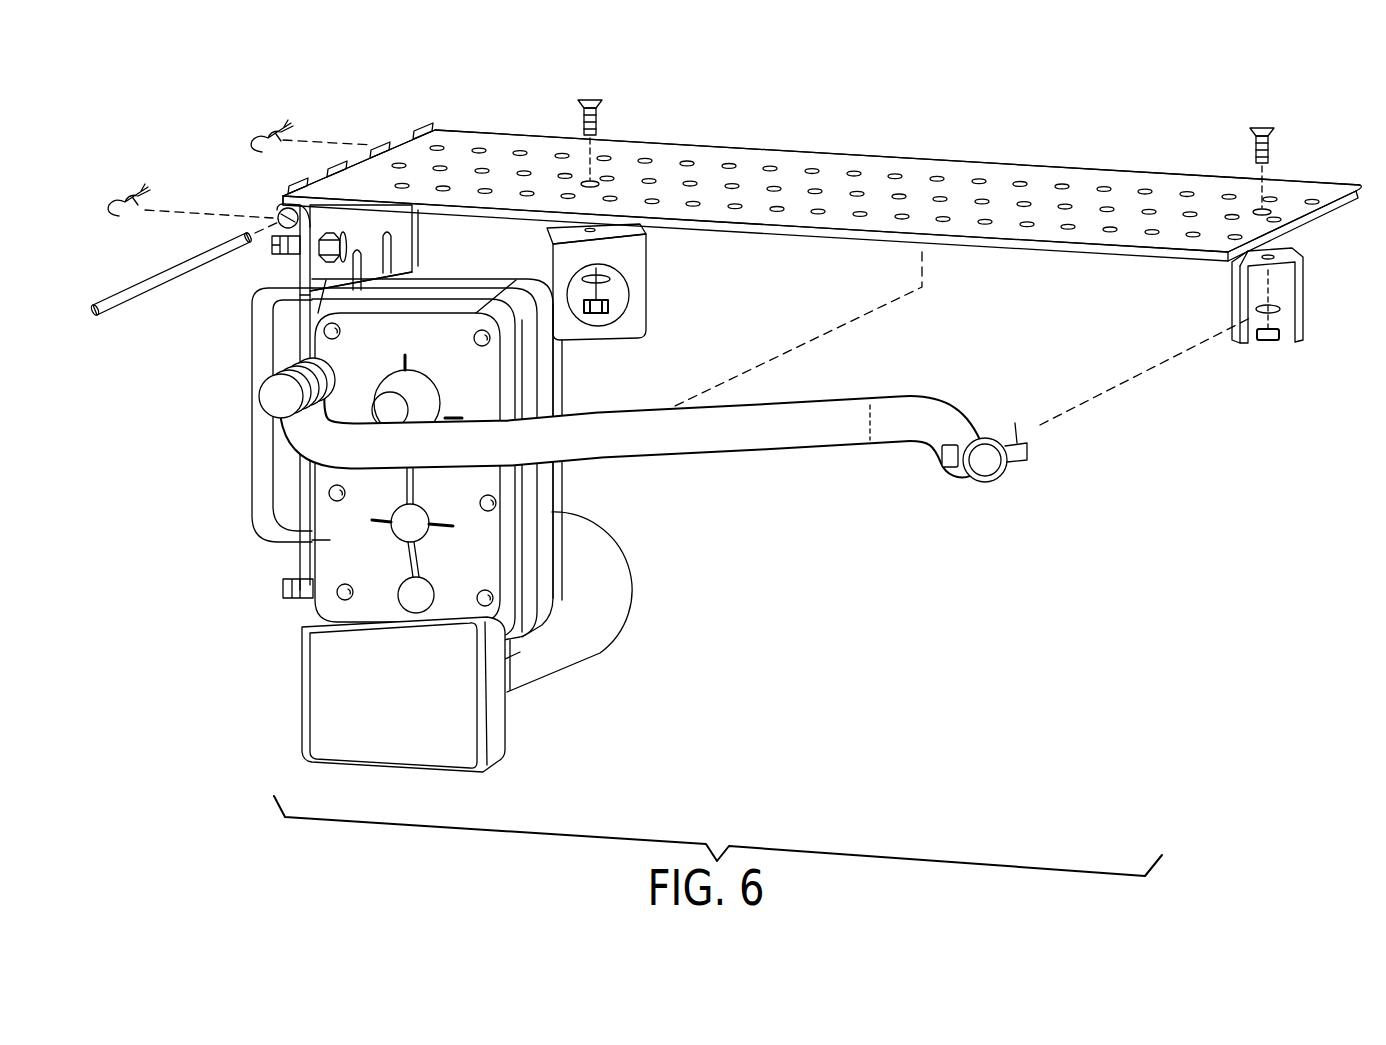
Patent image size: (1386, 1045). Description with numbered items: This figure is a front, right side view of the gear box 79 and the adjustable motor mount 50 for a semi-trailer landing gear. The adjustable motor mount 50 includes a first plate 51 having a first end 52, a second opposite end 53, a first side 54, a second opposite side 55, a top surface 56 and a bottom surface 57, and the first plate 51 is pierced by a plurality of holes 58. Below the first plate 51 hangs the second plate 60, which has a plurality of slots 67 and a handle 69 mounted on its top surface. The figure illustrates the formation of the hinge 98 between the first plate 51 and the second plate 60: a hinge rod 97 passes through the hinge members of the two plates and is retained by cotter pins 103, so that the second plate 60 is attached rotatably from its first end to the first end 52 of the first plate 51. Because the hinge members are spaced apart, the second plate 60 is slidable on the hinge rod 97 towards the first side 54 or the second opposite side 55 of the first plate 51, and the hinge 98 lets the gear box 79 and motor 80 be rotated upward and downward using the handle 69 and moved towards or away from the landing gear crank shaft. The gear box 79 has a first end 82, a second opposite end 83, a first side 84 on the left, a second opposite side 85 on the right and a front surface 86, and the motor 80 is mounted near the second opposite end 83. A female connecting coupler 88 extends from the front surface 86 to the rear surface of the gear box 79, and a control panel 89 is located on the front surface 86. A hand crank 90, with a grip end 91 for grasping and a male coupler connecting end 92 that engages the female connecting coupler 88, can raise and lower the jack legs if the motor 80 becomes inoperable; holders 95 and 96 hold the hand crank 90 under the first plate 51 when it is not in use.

The adjustable motor mount 50 is at (1217, 417).
The first plate 51 is at (868, 165).
The first end 52 is at (425, 132).
The second opposite end 53 is at (1318, 228).
The first side 54 is at (835, 242).
The second opposite side 55 is at (990, 163).
The top surface 56 is at (710, 178).
The bottom surface 57 is at (770, 282).
The holes 58 is at (1108, 205).
The second plate 60 is at (418, 253).
The slots 67 is at (340, 283).
The handle 69 is at (252, 462).
The gear box 79 is at (503, 520).
The motor 80 is at (603, 587).
The first end 82 is at (418, 302).
The second opposite end 83 is at (523, 640).
The first side 84 is at (268, 505).
The second opposite side 85 is at (530, 552).
The front surface 86 is at (345, 530).
The female connecting coupler 88 is at (417, 403).
The control panel 89 is at (325, 720).
The hand crank 90 is at (752, 447).
The grip end 91 is at (270, 390).
The male coupler connecting end 92 is at (990, 430).
The holder 95 is at (641, 292).
The holder 96 is at (1303, 305).
The hinge rod 97 is at (130, 295).
The hinge 98 is at (316, 168).
The cotter pins 103 is at (278, 128).